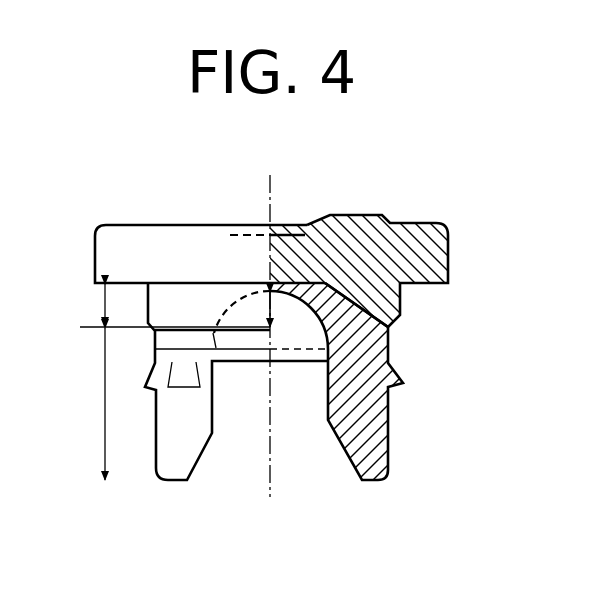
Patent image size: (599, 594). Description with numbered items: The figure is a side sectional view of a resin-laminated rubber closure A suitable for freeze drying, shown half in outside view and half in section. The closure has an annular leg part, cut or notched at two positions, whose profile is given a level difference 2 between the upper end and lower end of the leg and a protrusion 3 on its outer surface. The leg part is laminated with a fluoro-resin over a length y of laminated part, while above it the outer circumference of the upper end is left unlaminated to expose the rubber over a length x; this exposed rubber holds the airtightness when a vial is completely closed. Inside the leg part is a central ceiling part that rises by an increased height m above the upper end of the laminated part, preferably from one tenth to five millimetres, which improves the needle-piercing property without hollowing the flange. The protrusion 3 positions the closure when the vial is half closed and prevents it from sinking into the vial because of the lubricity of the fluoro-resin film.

The resin-laminated rubber closure A is at (137, 245).
The level difference 2 is at (389, 298).
The protrusion 3 is at (393, 363).
The length of exposed rubber part x is at (174, 305).
The length of laminated part y is at (95, 404).
The increased height of central ceiling part m is at (277, 304).